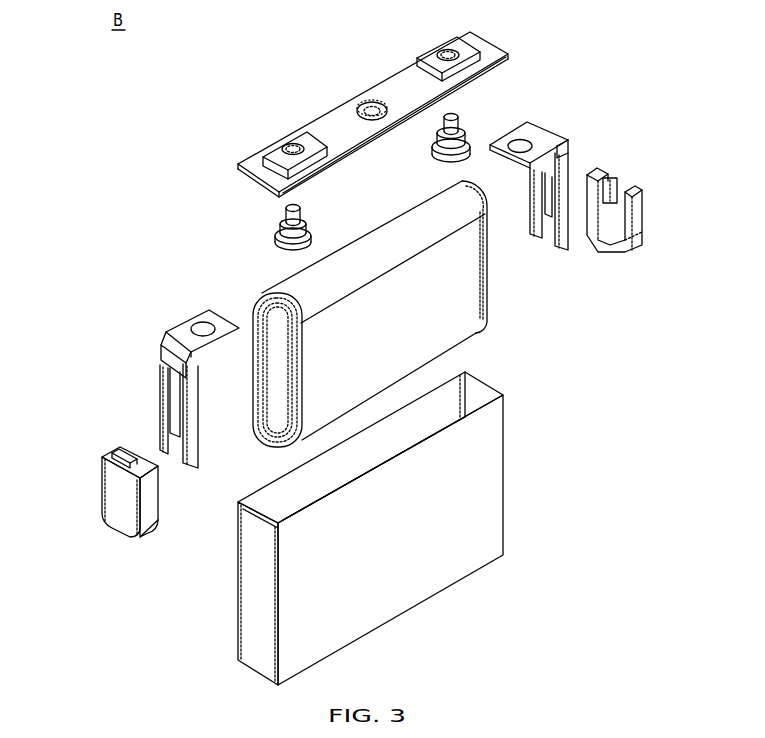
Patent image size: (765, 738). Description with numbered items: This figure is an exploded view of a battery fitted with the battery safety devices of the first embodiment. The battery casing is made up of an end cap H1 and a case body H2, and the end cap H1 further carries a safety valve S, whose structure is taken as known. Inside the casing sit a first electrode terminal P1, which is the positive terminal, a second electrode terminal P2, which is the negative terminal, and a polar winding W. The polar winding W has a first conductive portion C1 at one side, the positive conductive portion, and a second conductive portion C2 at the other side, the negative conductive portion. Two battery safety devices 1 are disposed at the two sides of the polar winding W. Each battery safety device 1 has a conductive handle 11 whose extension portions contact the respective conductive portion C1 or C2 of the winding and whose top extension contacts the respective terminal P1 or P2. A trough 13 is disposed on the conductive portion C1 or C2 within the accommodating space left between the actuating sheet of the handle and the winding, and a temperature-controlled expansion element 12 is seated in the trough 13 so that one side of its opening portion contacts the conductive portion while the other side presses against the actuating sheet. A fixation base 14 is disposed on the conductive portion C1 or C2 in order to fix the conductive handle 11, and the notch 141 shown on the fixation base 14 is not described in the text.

The end cap H1 is at (335, 117).
The case body H2 is at (487, 472).
The safety valve S is at (373, 103).
The first electrode terminal P1 is at (284, 216).
The second electrode terminal P2 is at (457, 122).
The polar winding W is at (443, 325).
The first conductive portion C1 is at (284, 297).
The second conductive portion C2 is at (487, 268).
The trough 13 is at (257, 383).
The battery safety device 1 is at (350, 272).
The conductive handle 11 is at (527, 125).
The temperature-controlled expansion element 12 is at (542, 210).
The fixation base 14 is at (359, 328).
The notch 141 is at (630, 175).